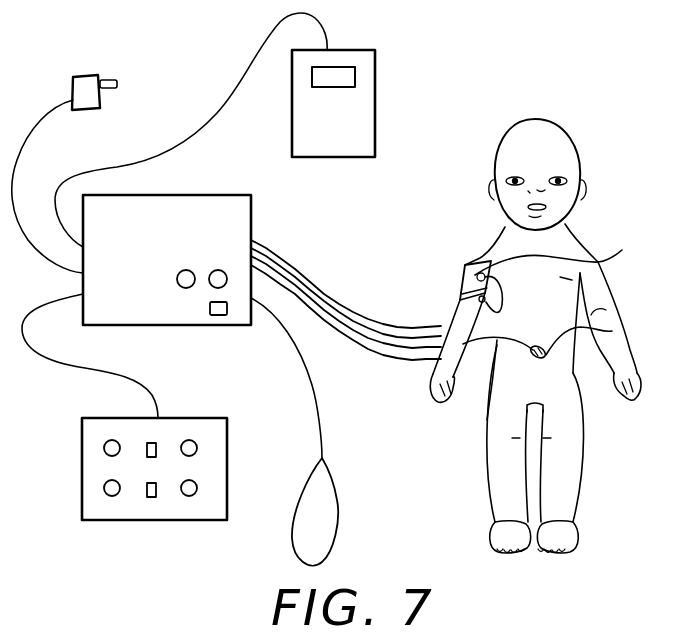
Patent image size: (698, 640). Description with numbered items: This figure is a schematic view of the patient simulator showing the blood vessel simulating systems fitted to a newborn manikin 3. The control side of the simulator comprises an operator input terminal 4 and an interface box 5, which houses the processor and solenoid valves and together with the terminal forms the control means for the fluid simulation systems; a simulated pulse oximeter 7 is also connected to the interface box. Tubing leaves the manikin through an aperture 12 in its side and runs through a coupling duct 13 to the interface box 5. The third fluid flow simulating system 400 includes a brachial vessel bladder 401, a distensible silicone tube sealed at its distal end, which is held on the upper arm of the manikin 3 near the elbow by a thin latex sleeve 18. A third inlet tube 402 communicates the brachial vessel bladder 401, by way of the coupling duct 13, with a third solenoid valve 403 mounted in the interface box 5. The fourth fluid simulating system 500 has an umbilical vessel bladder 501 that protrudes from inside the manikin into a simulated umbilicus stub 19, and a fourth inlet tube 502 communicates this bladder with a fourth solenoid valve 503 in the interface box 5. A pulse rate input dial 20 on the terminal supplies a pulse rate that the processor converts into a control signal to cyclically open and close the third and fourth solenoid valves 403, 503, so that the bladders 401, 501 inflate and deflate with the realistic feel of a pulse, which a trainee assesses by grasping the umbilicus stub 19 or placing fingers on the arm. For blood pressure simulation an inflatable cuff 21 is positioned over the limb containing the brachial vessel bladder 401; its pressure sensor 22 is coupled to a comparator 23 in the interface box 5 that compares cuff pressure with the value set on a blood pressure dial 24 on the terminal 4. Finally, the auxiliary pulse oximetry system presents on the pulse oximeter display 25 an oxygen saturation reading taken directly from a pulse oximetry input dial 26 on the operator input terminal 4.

The manikin 3 is at (570, 132).
The operator input terminal 4 is at (82, 432).
The interface box 5 is at (208, 195).
The simulated pulse oximeter 7 is at (375, 72).
The aperture 12 is at (494, 350).
The coupling duct 13 is at (298, 265).
The latex sleeve 18 is at (460, 290).
The umbilicus stub 19 is at (612, 331).
The pulse rate input dial 20 is at (111, 440).
The inflatable cuff 21 is at (497, 262).
The pressure sensor 22 is at (598, 263).
The comparator 23 is at (215, 318).
The blood pressure dial 24 is at (105, 487).
The pulse oximeter display 25 is at (345, 67).
The pulse oximetry input dial 26 is at (197, 490).
The third fluid flow simulating system 400 is at (422, 206).
The brachial vessel bladder 401 is at (458, 304).
The third inlet tube 402 is at (270, 248).
The third solenoid valve 403 is at (179, 269).
The fourth fluid simulating system 500 is at (548, 380).
The umbilical vessel bladder 501 is at (546, 360).
The fourth inlet tube 502 is at (330, 329).
The fourth solenoid valve 503 is at (218, 270).